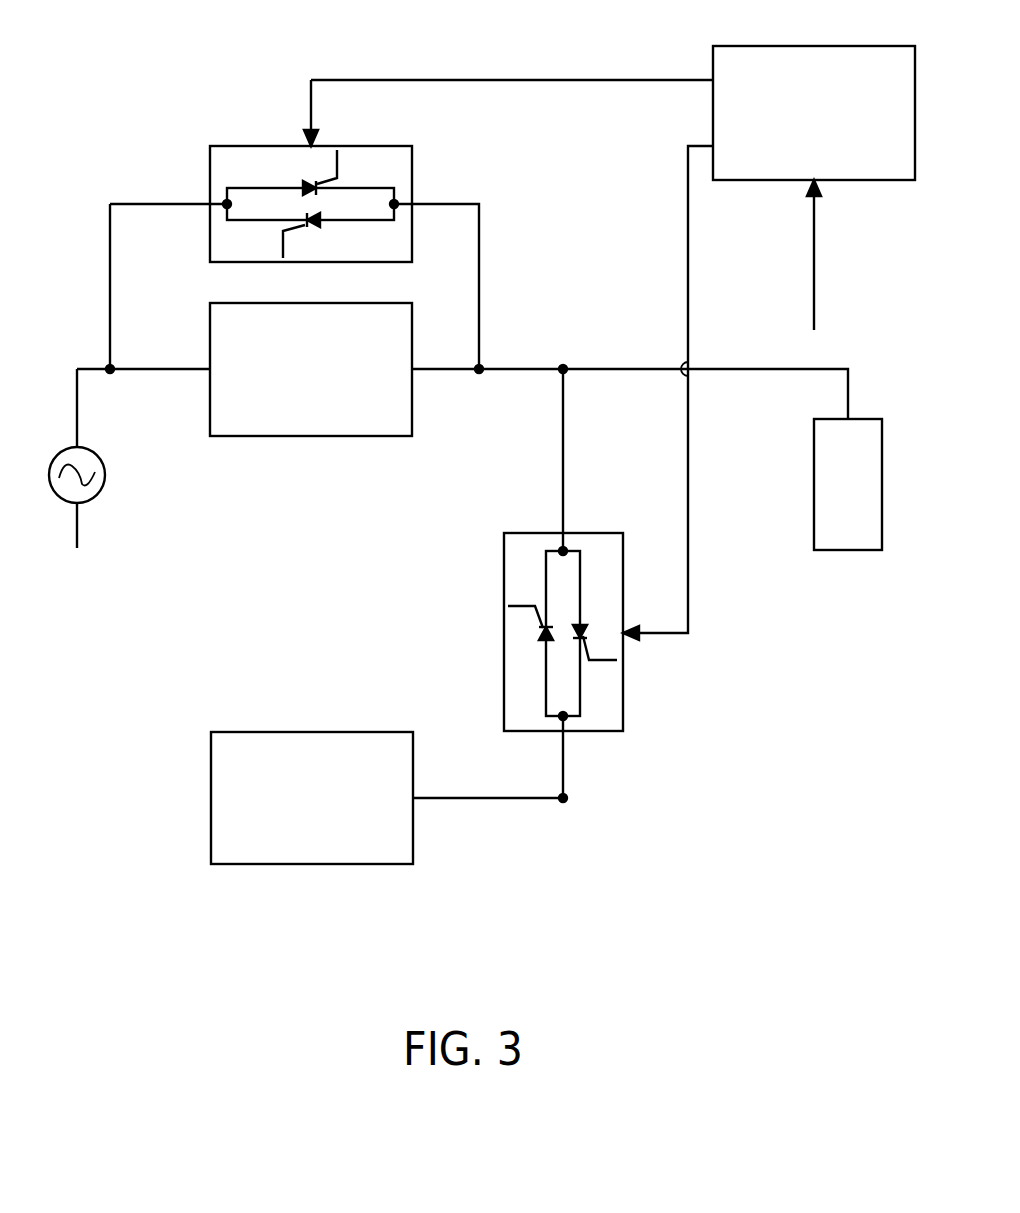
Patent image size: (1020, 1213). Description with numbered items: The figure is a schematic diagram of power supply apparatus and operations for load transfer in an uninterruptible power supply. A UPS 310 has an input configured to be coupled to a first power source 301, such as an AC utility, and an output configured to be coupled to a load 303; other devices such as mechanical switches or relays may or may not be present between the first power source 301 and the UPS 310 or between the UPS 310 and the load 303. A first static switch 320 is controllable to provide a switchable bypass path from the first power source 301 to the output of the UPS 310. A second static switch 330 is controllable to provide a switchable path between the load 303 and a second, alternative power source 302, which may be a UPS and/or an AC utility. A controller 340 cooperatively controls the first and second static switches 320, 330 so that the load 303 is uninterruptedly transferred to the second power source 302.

The first power source 301 is at (92, 497).
The second power source 302 is at (313, 863).
The load 303 is at (814, 485).
The UPS 310 is at (312, 435).
The first static switch 320 is at (312, 262).
The second static switch 330 is at (505, 632).
The controller 340 is at (810, 45).